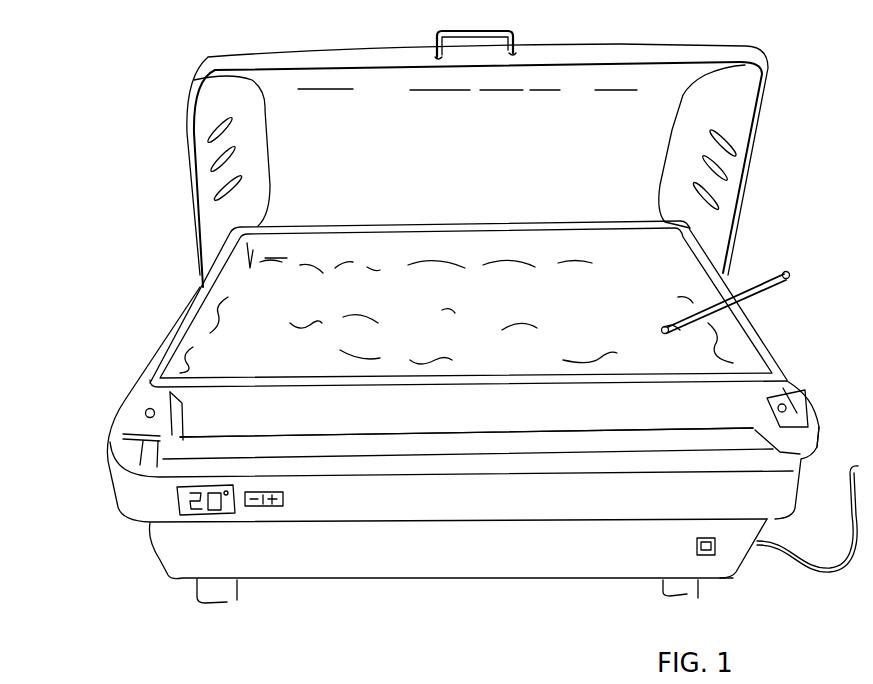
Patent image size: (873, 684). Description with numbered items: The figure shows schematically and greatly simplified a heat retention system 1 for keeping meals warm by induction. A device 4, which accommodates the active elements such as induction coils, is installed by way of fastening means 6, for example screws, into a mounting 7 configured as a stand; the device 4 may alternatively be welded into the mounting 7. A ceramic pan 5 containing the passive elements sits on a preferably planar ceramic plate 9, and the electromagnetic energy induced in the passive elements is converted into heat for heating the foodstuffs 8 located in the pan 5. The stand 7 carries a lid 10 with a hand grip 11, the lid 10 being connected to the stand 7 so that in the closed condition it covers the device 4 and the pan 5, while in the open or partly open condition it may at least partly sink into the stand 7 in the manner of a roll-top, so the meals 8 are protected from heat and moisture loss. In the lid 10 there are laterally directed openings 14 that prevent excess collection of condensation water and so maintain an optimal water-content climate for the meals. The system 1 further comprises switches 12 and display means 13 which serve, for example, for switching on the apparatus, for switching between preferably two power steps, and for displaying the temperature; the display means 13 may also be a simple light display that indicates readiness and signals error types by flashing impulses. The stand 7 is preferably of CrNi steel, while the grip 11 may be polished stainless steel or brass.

The heat retention system 1 is at (101, 255).
The device 4 is at (115, 474).
The ceramic pan 5 is at (182, 329).
The fastening means 6 is at (797, 393).
The mounting 7 is at (817, 445).
The foodstuffs 8 is at (727, 272).
The ceramic plate 9 is at (543, 445).
The lid 10 is at (742, 62).
The hand grip 11 is at (513, 33).
The switches 12 is at (707, 555).
The display means 13 is at (178, 509).
The openings 14 is at (222, 127).